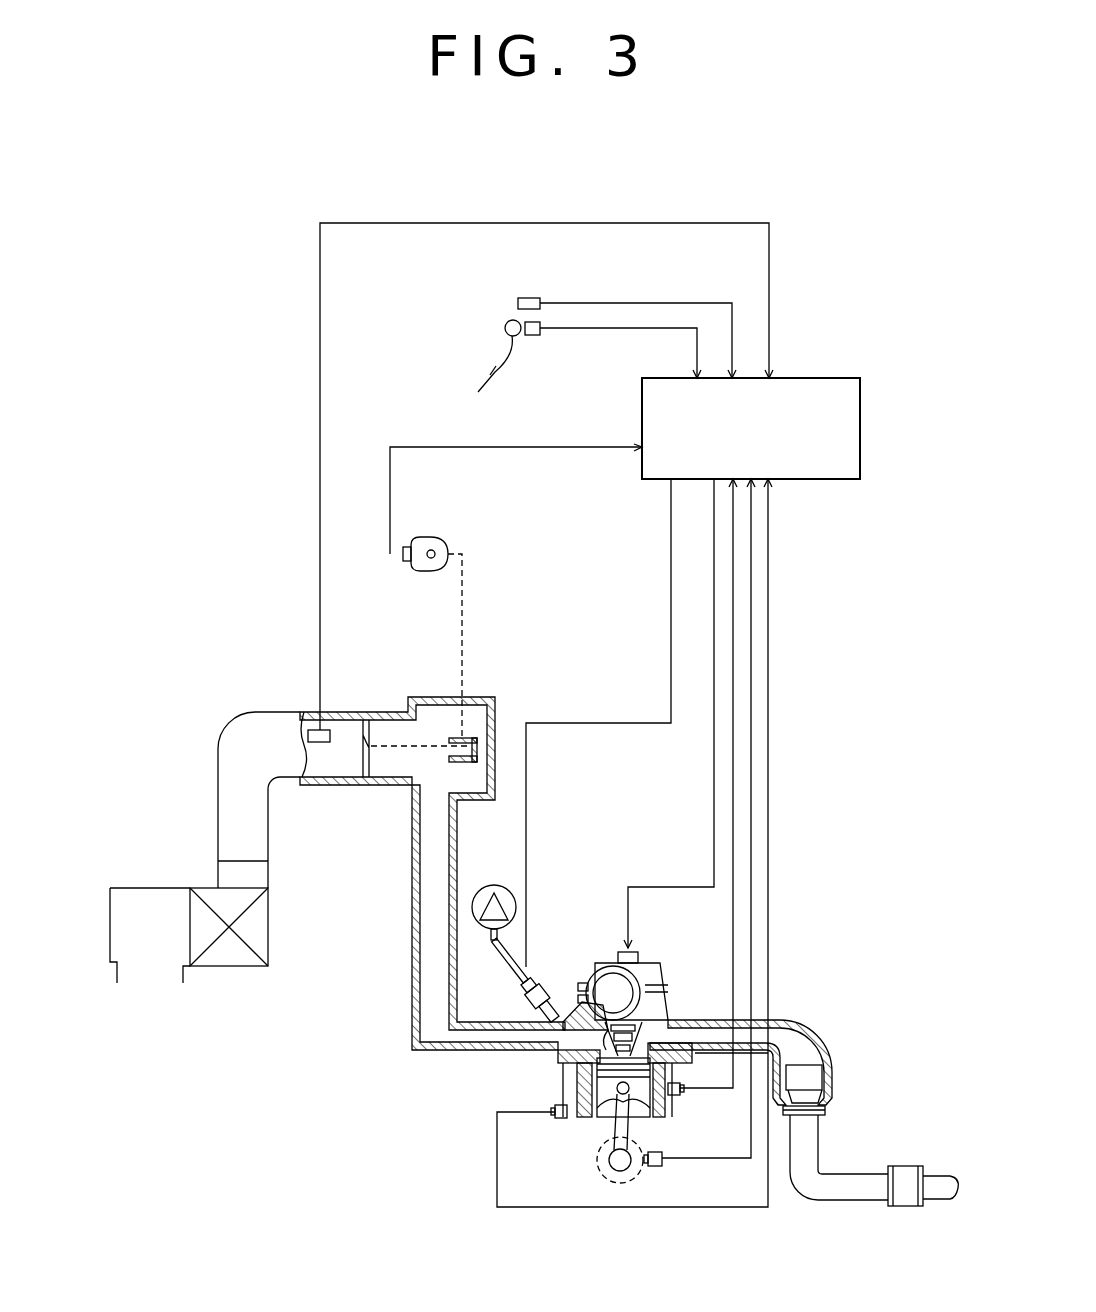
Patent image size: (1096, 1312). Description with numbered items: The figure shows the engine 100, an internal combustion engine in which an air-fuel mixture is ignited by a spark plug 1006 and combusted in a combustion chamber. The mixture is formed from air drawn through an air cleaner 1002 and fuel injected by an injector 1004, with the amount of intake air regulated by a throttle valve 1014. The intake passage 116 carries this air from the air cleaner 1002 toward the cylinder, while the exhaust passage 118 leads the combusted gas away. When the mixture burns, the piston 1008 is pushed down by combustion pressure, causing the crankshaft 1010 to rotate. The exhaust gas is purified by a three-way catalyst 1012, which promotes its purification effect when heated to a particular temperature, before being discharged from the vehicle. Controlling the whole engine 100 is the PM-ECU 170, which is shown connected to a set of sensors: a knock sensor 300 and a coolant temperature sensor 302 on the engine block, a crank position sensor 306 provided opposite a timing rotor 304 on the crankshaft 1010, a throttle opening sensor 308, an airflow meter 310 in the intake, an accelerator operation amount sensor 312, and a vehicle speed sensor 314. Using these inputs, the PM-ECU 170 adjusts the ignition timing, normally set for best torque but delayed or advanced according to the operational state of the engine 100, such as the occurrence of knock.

The PM-ECU 170 is at (830, 377).
The vehicle speed sensor 314 is at (553, 277).
The accelerator operation amount sensor 312 is at (532, 337).
The throttle opening sensor 308 is at (475, 517).
The airflow meter 310 is at (332, 713).
The throttle valve 1014 is at (365, 779).
The air cleaner 1002 is at (227, 966).
The injector 1004 is at (566, 972).
The spark plug 1006 is at (682, 943).
The intake pipe 116 is at (512, 1022).
The exhaust pipe 118 is at (705, 1007).
The three-way catalyst 1012 is at (807, 1063).
The engine 100 is at (540, 1076).
The knock sensor 300 is at (553, 1126).
The coolant temperature sensor 302 is at (680, 1096).
The piston 1008 is at (600, 1117).
The crankshaft 1010 is at (593, 1182).
The timing rotor 304 is at (628, 1170).
The crank position sensor 306 is at (660, 1168).